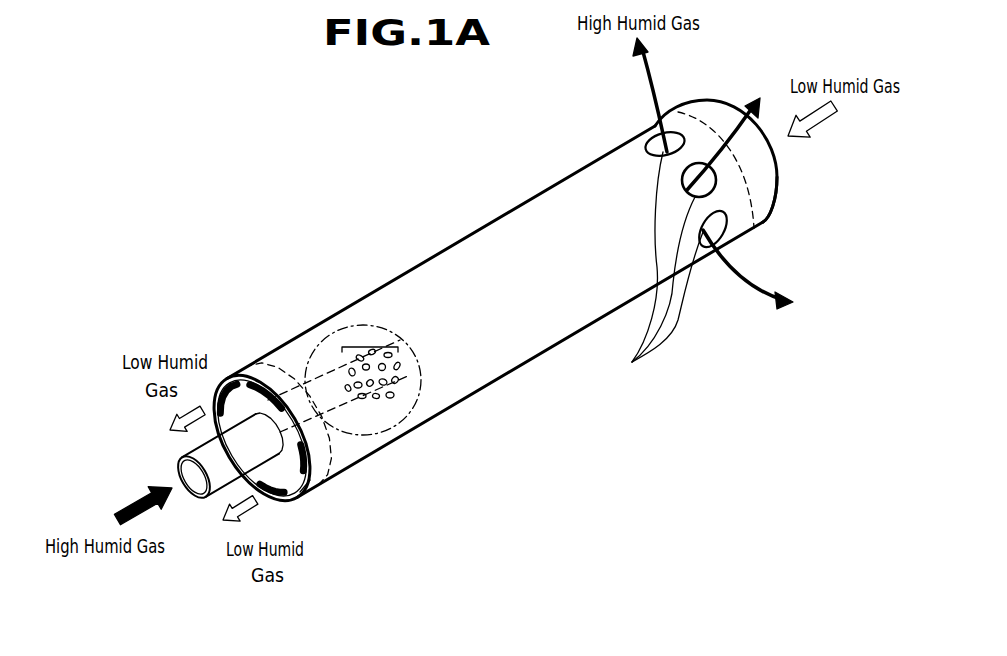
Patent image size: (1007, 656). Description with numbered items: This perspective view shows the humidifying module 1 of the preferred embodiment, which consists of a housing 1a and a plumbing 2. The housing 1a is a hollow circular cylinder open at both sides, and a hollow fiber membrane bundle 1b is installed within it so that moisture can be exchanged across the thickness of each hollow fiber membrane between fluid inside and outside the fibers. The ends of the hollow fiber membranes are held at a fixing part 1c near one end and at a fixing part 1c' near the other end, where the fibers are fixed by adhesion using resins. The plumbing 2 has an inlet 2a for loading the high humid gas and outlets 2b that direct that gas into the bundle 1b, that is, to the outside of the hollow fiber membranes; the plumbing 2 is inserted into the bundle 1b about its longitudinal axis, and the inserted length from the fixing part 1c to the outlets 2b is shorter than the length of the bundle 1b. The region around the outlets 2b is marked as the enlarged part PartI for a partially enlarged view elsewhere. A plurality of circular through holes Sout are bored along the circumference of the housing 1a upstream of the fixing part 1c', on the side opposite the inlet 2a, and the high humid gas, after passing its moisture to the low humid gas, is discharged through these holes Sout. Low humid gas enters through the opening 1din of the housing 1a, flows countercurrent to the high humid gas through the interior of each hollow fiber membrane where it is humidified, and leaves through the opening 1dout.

The humidifying module 1 is at (376, 248).
The housing 1a is at (480, 242).
The hollow fiber membrane bundle 1b is at (238, 404).
The fixing part 1c is at (289, 378).
The fixing part 1c' is at (716, 121).
The opening 1din is at (778, 188).
The opening 1dout is at (282, 480).
The plumbing 2 is at (219, 522).
The inlet 2a is at (190, 476).
The outlets 2b is at (367, 347).
The Part-I PartI is at (412, 407).
The circular through holes Sout is at (659, 273).